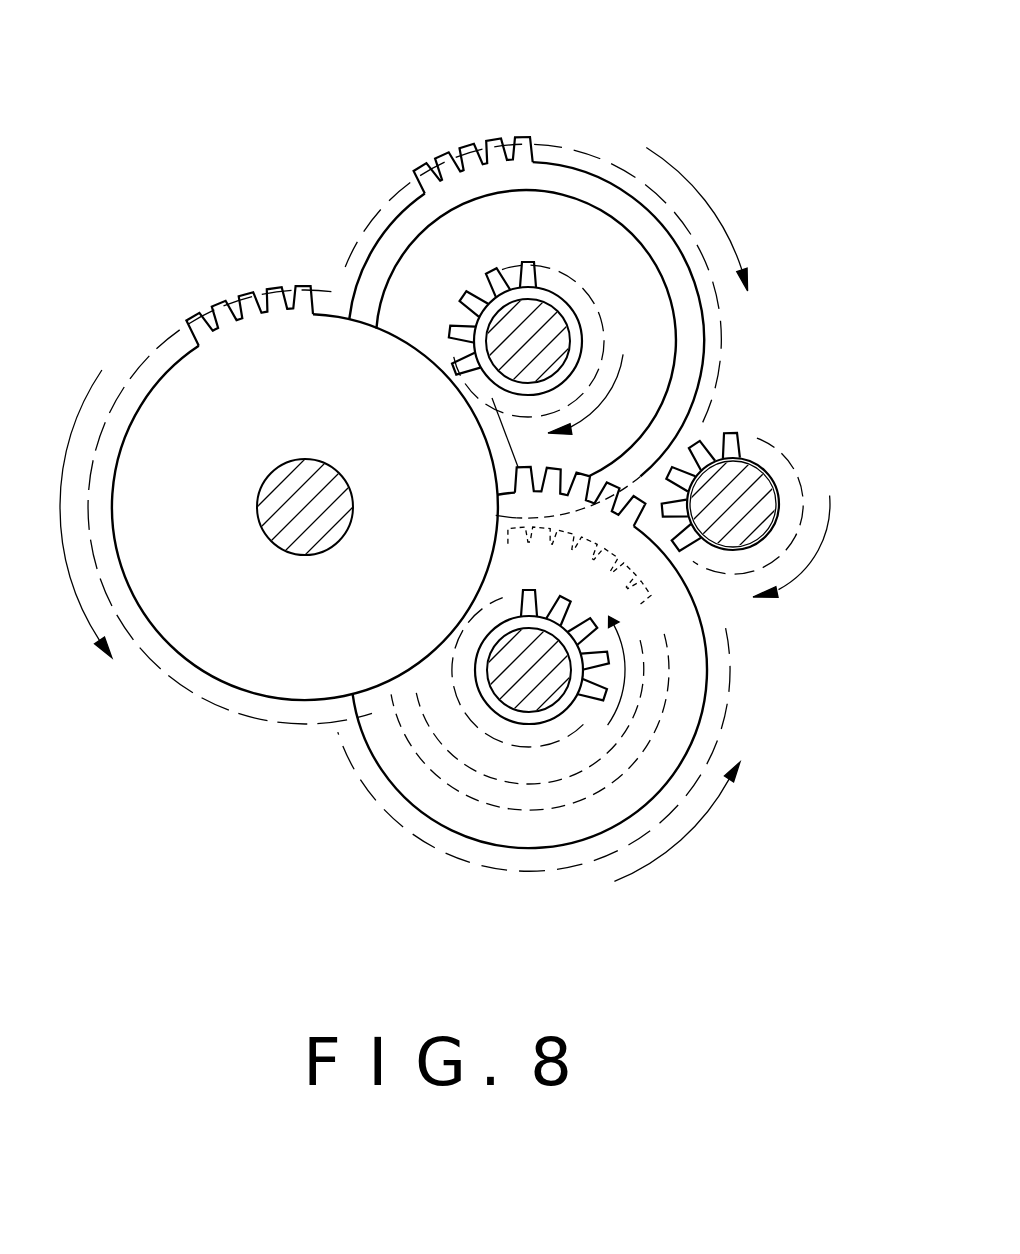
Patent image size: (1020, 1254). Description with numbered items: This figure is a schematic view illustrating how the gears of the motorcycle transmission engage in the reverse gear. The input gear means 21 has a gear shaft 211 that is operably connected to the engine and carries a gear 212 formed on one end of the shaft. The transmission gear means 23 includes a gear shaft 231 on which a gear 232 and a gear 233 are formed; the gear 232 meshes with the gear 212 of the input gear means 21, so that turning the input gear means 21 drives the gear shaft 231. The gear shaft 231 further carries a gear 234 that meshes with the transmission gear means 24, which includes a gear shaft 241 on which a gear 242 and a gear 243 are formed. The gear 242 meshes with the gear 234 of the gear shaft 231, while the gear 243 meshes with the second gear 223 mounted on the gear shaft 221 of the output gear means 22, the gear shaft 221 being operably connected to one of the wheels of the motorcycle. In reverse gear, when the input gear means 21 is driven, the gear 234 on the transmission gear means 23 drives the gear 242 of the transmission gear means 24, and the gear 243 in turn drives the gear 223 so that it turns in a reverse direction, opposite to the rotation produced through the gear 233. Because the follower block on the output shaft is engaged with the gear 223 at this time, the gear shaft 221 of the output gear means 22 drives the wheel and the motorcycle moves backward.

The input gear means 21 is at (808, 478).
The gear shaft 211 is at (731, 502).
The gear 212 is at (733, 452).
The output gear means 22 is at (187, 710).
The gear shaft 221 is at (296, 502).
The second gear 223 is at (222, 323).
The transmission gear means 23 is at (380, 828).
The gear shaft 231 is at (522, 677).
The gear 232 is at (645, 508).
The gear 233 is at (590, 690).
The gear 234 is at (608, 548).
The transmission gear means 24 is at (525, 133).
The gear shaft 241 is at (537, 342).
The gear 242 is at (436, 158).
The gear 243 is at (488, 280).